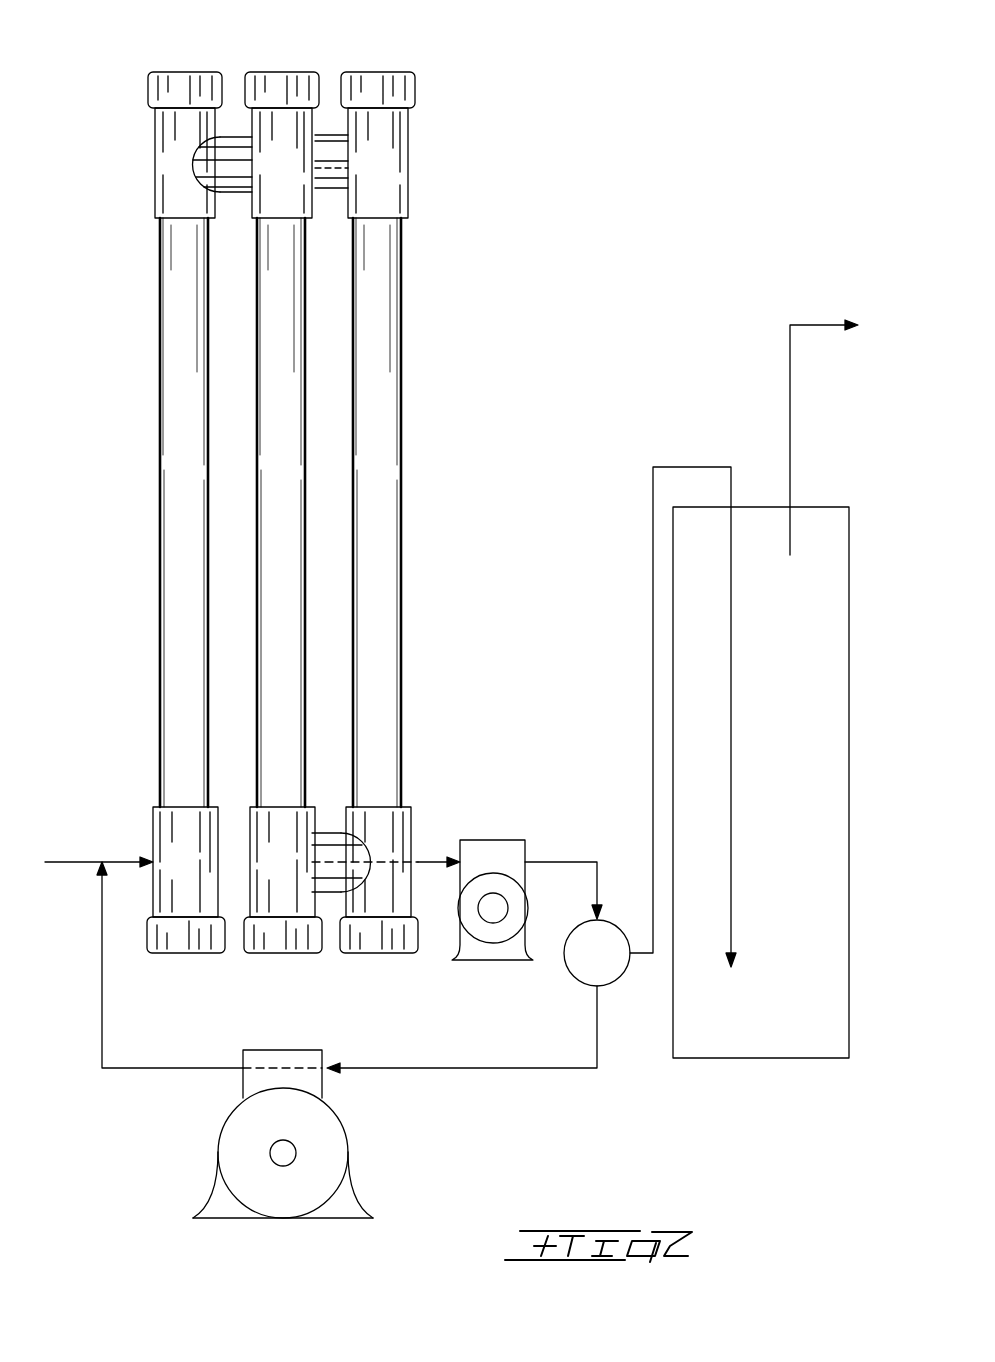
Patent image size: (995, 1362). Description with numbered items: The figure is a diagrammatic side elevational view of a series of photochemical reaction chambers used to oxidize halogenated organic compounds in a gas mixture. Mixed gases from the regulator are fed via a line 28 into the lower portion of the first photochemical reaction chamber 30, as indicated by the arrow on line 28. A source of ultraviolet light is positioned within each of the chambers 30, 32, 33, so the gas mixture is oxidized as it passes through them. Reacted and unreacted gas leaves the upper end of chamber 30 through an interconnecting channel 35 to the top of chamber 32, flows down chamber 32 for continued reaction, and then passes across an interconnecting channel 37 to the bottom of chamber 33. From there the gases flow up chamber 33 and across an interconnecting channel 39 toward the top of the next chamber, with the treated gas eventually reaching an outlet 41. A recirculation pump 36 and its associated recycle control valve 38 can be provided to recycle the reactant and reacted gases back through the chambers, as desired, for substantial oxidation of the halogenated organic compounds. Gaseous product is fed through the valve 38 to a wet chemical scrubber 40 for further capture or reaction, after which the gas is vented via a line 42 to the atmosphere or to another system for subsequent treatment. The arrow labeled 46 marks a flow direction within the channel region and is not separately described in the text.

The line 28 is at (80, 860).
The photochemical reaction chamber 30 is at (183, 84).
The photochemical reaction chamber 32 is at (280, 82).
The photochemical reaction chamber 33 is at (380, 88).
The interconnecting channel 35 is at (235, 147).
The recirculation pump 36 is at (507, 853).
The interconnecting channel 37 is at (333, 843).
The recycle control valve 38 is at (585, 968).
The interconnecting channel 39 is at (325, 130).
The wet chemical scrubber 40 is at (830, 530).
The outlet 41 is at (418, 860).
The line 42 is at (790, 417).
The flow direction arrow 46 is at (323, 168).